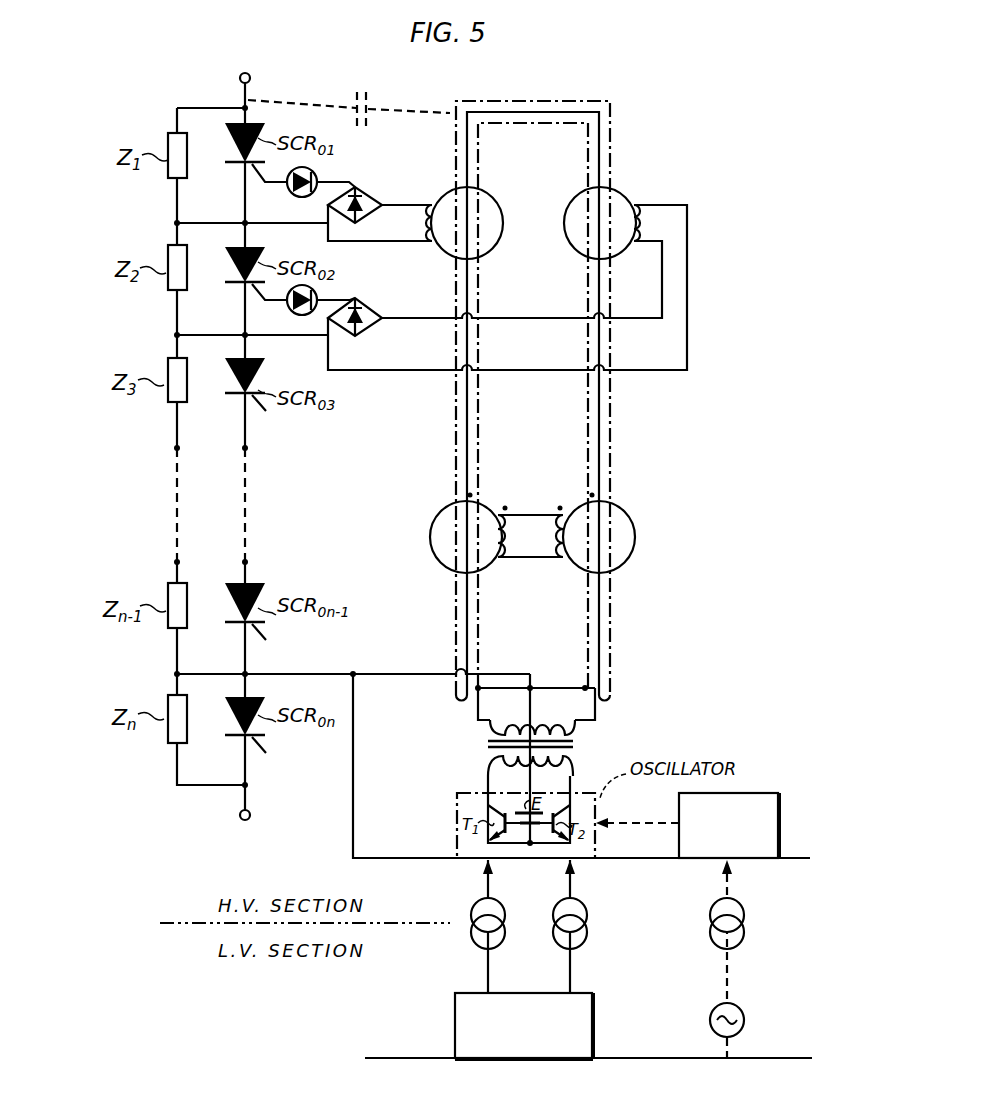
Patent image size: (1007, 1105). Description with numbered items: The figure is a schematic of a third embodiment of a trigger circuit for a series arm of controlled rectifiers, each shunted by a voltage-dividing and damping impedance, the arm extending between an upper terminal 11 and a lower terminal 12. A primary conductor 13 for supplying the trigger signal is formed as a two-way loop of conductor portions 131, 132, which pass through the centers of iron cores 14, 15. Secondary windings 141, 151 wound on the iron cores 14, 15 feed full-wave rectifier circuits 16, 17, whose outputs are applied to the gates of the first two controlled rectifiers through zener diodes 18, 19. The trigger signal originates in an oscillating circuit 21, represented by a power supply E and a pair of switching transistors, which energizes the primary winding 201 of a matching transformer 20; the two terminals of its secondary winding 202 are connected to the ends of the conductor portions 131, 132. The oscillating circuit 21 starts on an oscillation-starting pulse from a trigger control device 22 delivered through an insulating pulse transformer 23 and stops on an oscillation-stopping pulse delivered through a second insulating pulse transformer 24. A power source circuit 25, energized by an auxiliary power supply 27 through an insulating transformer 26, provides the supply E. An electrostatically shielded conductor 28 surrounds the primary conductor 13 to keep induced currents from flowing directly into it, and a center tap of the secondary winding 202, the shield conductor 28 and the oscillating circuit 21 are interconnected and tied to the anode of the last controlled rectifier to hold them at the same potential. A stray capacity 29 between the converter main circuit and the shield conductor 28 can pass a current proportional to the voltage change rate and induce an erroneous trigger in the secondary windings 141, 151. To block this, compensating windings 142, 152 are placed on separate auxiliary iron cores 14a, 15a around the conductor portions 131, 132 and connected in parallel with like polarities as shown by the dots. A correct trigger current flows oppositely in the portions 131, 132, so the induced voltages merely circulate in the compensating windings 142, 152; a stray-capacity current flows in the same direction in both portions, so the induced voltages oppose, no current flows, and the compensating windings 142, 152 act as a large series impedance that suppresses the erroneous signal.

The input terminal 11 is at (251, 78).
The input terminal 12 is at (251, 815).
The primary conductor 13 is at (545, 112).
The iron core 14 is at (497, 250).
The iron core 15 is at (566, 249).
The full-wave rectifier circuit 16 is at (370, 196).
The full-wave rectifier circuit 17 is at (358, 298).
The zener diode 18 is at (288, 195).
The zener diode 19 is at (290, 312).
The matching transformer 20 is at (574, 744).
The oscillating circuit 21 is at (576, 796).
The trigger control device 22 is at (595, 1019).
The insulating pulse transformer 23 is at (504, 928).
The insulating pulse transformer 24 is at (586, 928).
The power source circuit 25 is at (780, 823).
The insulating transformer 26 is at (743, 928).
The auxiliary power supply 27 is at (742, 1008).
The electrostatically shielded conductor 28 is at (605, 101).
The stray capacity 29 is at (366, 96).
The primary conductor portion 131 is at (468, 421).
The primary conductor portion 132 is at (600, 421).
The secondary winding 141 is at (425, 226).
The compensating winding 142 is at (512, 545).
The secondary winding 151 is at (642, 216).
The compensating winding 152 is at (552, 545).
The auxiliary iron core 14a is at (486, 506).
The auxiliary iron core 15a is at (624, 507).
The primary winding 201 is at (487, 770).
The secondary winding 202 is at (556, 716).